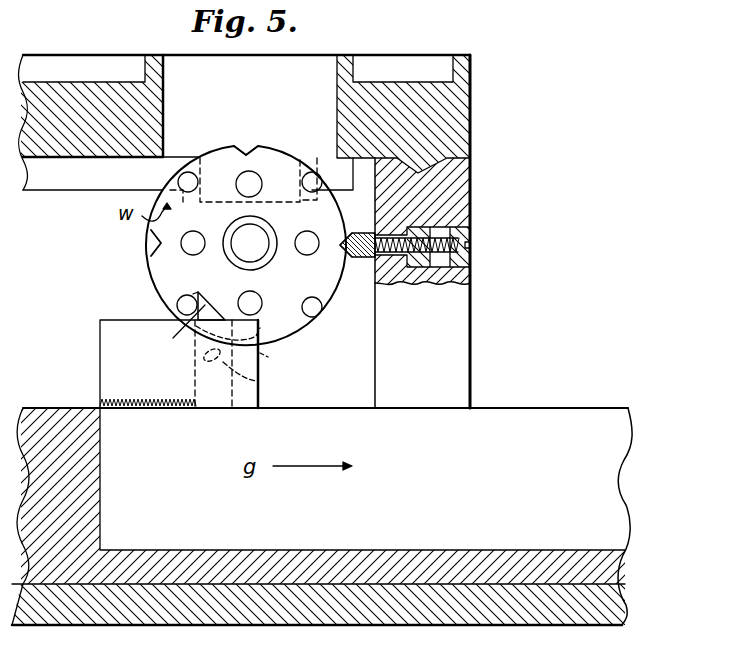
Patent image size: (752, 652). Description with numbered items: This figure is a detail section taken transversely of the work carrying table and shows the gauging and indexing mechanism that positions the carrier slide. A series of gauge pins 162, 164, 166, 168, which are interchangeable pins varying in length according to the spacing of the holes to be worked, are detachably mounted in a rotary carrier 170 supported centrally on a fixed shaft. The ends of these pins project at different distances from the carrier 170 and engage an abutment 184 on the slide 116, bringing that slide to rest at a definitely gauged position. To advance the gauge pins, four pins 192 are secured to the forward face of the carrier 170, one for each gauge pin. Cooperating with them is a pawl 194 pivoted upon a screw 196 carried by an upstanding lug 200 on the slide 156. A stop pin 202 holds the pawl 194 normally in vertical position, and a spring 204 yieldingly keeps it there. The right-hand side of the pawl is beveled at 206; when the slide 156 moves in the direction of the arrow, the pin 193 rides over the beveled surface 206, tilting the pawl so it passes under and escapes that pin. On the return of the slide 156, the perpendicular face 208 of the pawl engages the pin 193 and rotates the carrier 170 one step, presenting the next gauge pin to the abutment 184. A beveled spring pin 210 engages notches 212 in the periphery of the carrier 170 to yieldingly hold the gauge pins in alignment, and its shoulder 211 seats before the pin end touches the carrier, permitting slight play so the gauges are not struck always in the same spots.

The slide 116 is at (453, 125).
The slide 156 is at (570, 403).
The gauge pin 162 is at (270, 287).
The gauge pin 164 is at (183, 250).
The gauge pin 166 is at (252, 181).
The gauge pin 168 is at (300, 236).
The rotary carrier 170 is at (239, 152).
The abutment 184 is at (233, 174).
The pins 192 is at (179, 180).
The pin 193 is at (318, 312).
The pawl 194 is at (172, 329).
The screw 196 is at (257, 381).
The upstanding lug 200 is at (110, 344).
The stop pin 202 is at (244, 144).
The spring 204 is at (104, 400).
The beveled surface 206 is at (205, 305).
The perpendicular face 208 is at (193, 294).
The spring pin 210 is at (348, 255).
The shoulder 211 is at (408, 231).
The notches 212 is at (150, 238).